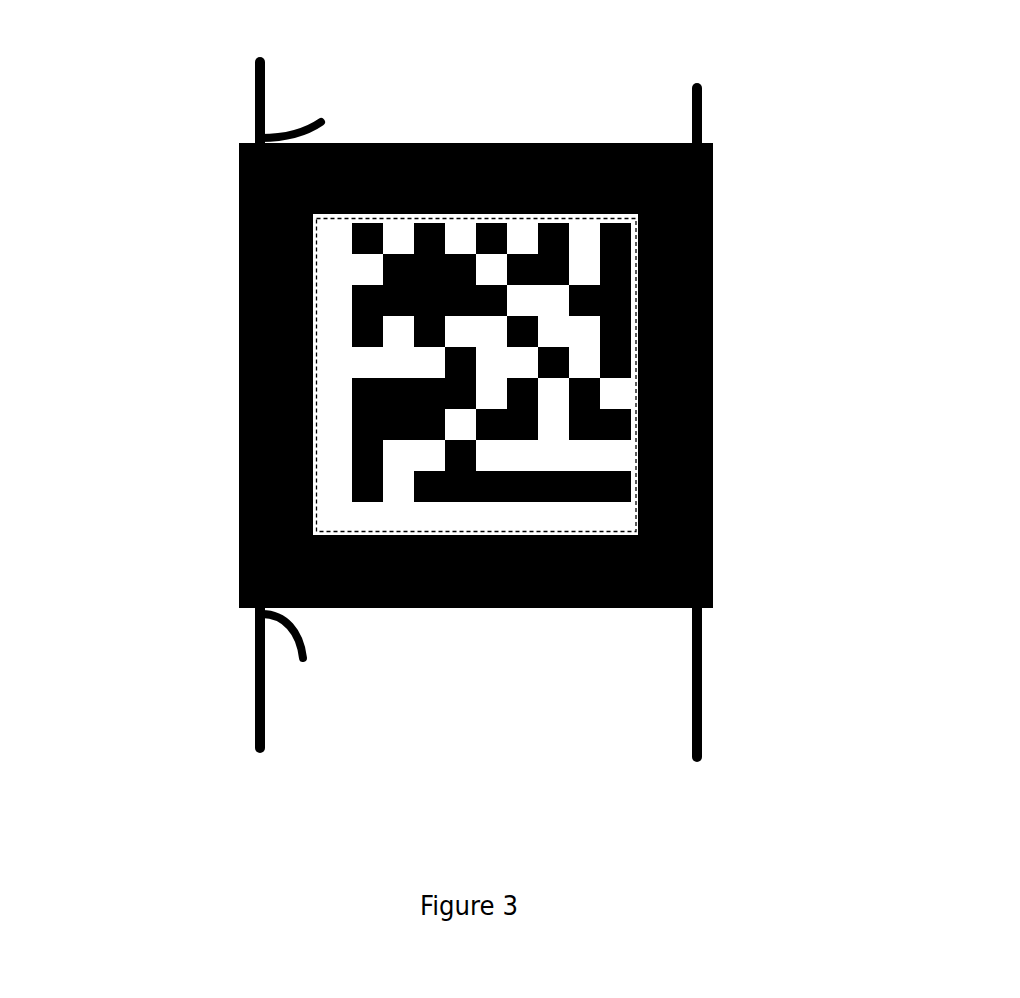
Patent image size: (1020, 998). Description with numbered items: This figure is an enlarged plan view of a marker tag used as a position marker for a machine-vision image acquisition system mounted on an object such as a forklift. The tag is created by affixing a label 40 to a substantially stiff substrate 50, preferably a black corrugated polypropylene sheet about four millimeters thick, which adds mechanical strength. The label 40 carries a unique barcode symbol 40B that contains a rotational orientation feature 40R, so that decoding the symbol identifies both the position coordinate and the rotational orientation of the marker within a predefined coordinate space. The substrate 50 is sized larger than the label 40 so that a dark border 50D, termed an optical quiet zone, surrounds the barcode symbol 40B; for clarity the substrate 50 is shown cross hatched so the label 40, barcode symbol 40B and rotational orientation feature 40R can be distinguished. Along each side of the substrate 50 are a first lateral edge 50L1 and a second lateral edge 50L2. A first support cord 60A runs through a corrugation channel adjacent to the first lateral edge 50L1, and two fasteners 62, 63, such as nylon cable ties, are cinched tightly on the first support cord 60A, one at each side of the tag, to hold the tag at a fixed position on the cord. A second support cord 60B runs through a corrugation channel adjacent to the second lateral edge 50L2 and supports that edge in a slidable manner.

The substrate 50 is at (471, 379).
The dark border 50D is at (683, 242).
The first lateral edge 50L1 is at (240, 385).
The second lateral edge 50L2 is at (715, 437).
The label 40 is at (648, 365).
The barcode symbol 40B is at (343, 299).
The rotational orientation feature 40R is at (329, 466).
The first support cord 60A is at (253, 698).
The second support cord 60B is at (692, 682).
The fastener 62 is at (253, 617).
The fastener 63 is at (256, 135).